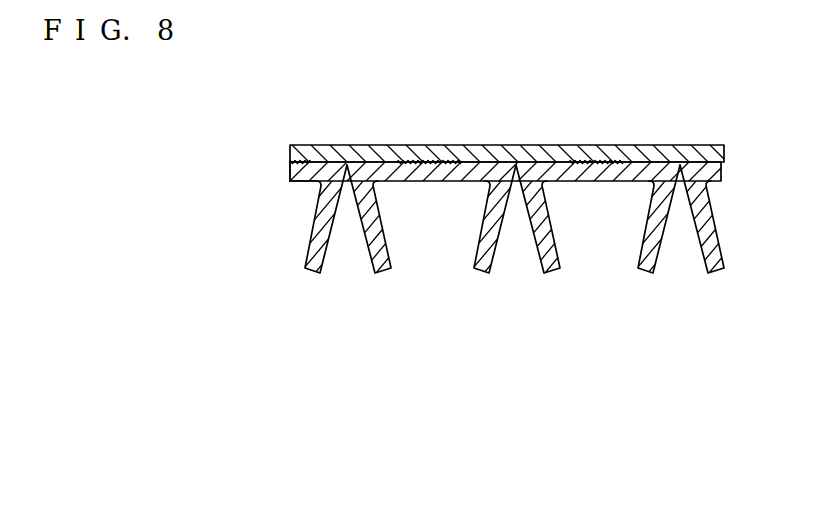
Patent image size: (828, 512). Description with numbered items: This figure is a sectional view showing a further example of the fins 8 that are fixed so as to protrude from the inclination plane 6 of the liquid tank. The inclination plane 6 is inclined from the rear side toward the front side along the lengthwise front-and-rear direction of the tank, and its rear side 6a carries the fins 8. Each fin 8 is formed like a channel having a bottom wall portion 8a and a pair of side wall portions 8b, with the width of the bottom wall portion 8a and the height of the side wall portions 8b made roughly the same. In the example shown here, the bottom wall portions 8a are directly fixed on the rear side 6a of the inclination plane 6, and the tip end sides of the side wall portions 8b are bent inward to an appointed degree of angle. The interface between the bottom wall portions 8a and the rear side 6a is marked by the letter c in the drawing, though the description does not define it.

The inclination plane 6 is at (707, 152).
The rear side of the inclination plane 6a is at (318, 184).
The fin 8 is at (513, 217).
The bottom wall portion 8a is at (390, 172).
The side wall portion 8b is at (373, 269).
The bonding layer c is at (443, 162).